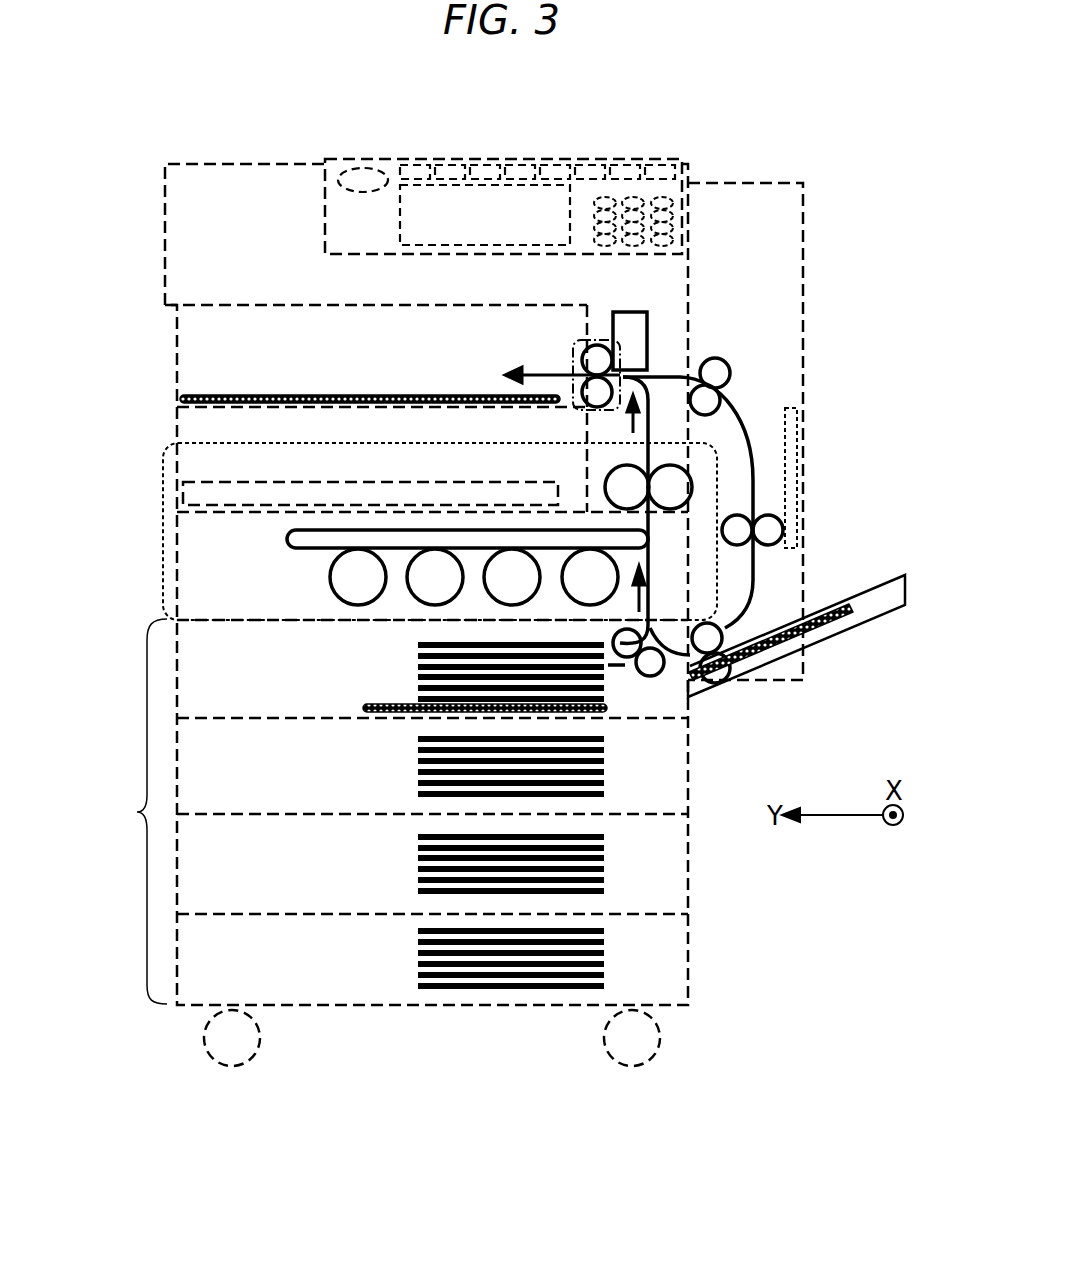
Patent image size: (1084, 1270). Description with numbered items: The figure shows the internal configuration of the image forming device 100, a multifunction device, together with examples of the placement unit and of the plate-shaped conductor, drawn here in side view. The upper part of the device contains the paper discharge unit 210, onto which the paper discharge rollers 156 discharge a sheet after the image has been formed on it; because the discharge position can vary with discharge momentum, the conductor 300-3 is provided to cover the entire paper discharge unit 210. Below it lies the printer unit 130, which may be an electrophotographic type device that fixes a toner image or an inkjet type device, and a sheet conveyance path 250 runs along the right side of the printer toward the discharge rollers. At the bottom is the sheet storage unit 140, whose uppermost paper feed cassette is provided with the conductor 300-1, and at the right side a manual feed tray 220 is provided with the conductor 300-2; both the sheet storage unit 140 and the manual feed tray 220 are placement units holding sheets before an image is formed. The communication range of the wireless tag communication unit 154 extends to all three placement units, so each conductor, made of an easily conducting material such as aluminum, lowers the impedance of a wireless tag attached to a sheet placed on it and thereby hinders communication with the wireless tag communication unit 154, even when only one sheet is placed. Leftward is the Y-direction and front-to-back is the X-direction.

The image forming device 100 is at (748, 120).
The paper discharge unit 210 is at (198, 340).
The conductor 300-3 is at (270, 394).
The paper discharge rollers 156 is at (573, 358).
The conveyance path 250 is at (648, 427).
The wireless tag communication unit 154 is at (790, 408).
The printer unit 130 is at (163, 542).
The conductor 300-2 is at (822, 603).
The manual feed tray 220 is at (882, 582).
The conductor 300-1 is at (390, 704).
The sheet storage unit 140 is at (137, 812).